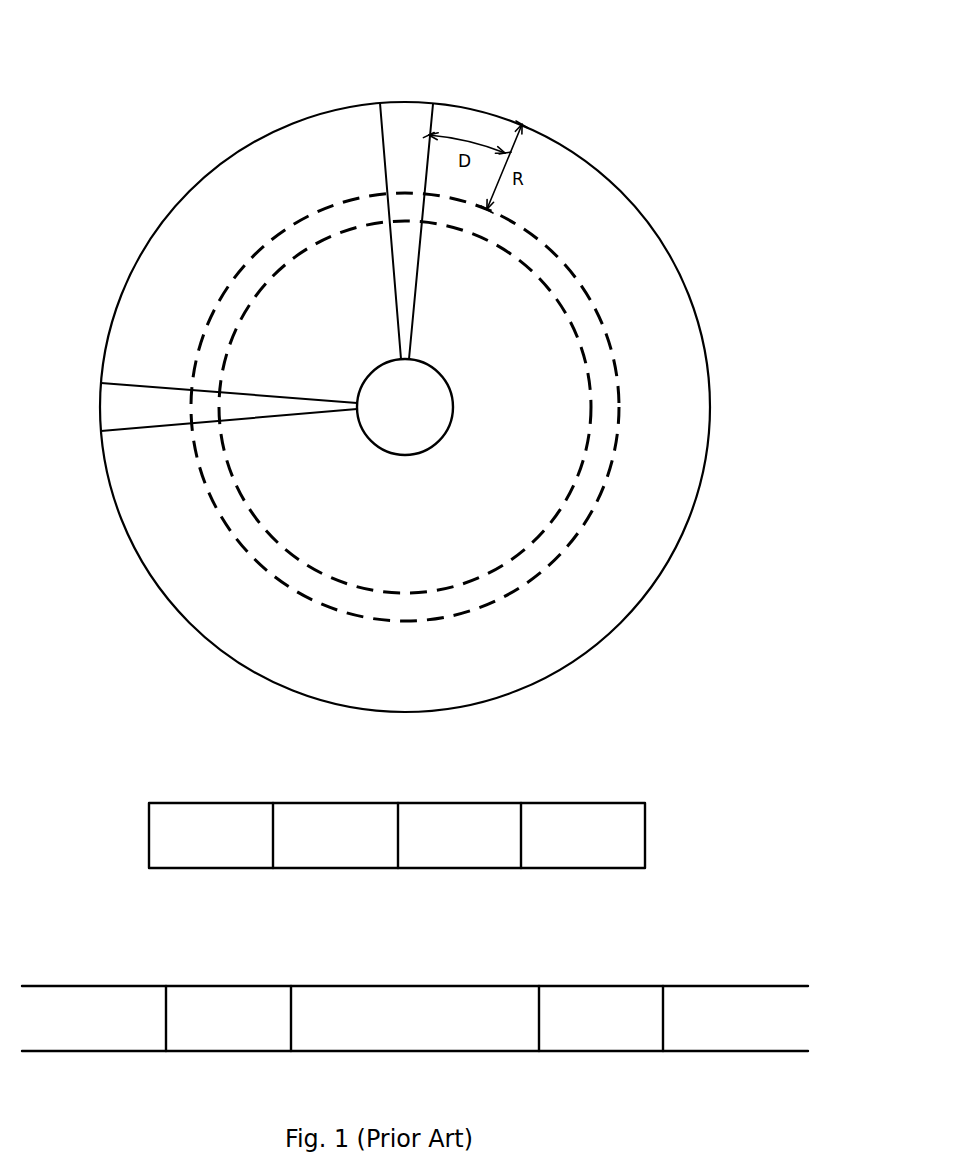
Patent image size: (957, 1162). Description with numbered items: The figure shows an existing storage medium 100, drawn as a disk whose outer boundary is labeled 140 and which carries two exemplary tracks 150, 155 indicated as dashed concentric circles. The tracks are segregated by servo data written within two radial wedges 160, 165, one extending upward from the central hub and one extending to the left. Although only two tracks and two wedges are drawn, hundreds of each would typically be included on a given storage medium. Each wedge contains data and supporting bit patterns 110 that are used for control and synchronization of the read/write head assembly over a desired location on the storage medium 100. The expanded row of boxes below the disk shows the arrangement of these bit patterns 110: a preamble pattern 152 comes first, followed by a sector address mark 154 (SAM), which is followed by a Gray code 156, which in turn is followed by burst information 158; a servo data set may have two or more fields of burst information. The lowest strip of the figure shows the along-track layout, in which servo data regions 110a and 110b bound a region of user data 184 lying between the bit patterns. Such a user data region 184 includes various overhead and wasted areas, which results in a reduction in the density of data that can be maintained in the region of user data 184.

The storage medium 100 is at (102, 56).
The bit patterns 110 is at (507, 778).
The servo data region 110a is at (205, 1044).
The servo data region 110b is at (578, 1044).
The storage disk 140 is at (613, 183).
The track 150 is at (545, 242).
The track 155 is at (552, 297).
The wedge 160 is at (405, 107).
The wedge 165 is at (107, 410).
The preamble pattern 152 is at (194, 862).
The sector address mark 154 is at (318, 862).
The Gray code 156 is at (442, 862).
The burst information 158 is at (566, 862).
The user data 184 is at (400, 1044).